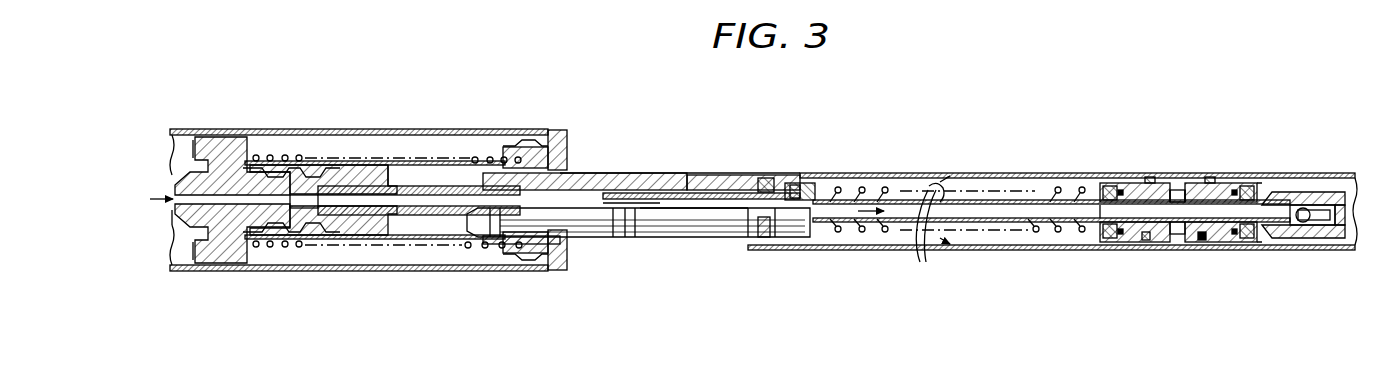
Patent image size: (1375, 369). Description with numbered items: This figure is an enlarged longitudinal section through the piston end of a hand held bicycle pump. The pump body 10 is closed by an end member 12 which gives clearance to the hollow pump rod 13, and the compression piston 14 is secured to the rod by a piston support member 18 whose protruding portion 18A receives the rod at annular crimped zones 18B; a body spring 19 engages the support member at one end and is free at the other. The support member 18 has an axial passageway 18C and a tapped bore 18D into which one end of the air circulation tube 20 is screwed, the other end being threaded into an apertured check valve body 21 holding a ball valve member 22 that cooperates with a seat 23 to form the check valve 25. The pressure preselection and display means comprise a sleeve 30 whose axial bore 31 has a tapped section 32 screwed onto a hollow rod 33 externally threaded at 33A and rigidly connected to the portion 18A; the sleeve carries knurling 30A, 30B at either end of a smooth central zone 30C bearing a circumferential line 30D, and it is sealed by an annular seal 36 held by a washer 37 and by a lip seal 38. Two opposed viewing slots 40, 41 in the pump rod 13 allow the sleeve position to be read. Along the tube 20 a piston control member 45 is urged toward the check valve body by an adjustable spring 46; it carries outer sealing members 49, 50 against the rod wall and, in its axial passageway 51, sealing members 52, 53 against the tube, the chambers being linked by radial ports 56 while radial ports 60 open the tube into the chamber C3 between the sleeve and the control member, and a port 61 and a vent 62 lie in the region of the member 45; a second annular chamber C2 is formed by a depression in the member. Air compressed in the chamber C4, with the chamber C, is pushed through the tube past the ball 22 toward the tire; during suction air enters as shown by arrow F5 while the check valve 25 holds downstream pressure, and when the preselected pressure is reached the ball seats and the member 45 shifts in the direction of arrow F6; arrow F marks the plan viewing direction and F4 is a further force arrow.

The pump body 10 is at (436, 128).
The end member 12 is at (545, 146).
The pump rod 13 is at (856, 173).
The compression piston 14 is at (208, 137).
The piston support member 18 is at (334, 162).
The protruding portion 18A is at (371, 178).
The annular crimped zones 18B is at (312, 172).
The axial passageway 18C is at (237, 195).
The tapped bore 18D is at (376, 195).
The body spring 19 is at (272, 250).
The air circulation tube 20 is at (965, 202).
The check valve body 21 is at (1274, 196).
The ball valve member 22 is at (1310, 220).
The seat 23 is at (1304, 222).
The check valve 25 is at (1313, 188).
The sleeve 30 is at (638, 225).
The knurling 30A is at (710, 233).
The knurling 30B is at (602, 222).
The smooth cylindrical central zone 30C is at (641, 238).
The circumferential line 30D is at (628, 238).
The axial bore 31 is at (692, 203).
The tapped section 32 is at (648, 196).
The hollow rod 33 is at (588, 189).
The external thread 33A is at (560, 186).
The annular seal 36 is at (800, 190).
The washer 37 is at (812, 192).
The seal 38 is at (768, 183).
The viewing slot 40 is at (707, 180).
The viewing slot 41 is at (736, 240).
The piston control member 45 is at (1148, 252).
The adjustable spring 46 is at (1036, 190).
The sealing member 49 is at (1120, 238).
The sealing member 50 is at (1200, 242).
The axial passageway 51 is at (1176, 205).
The sealing member 52 is at (1110, 240).
The sealing member 53 is at (1242, 240).
The radial ports 56 is at (1146, 241).
The radial ports 60 is at (935, 230).
The port 61 is at (1108, 226).
The vent 62 is at (1162, 183).
The chamber C is at (1213, 203).
The second annular chamber C2 is at (1180, 182).
The chamber C3 is at (907, 183).
The compression chamber C4 is at (180, 266).
The viewing direction arrow F is at (760, 118).
The force F4 is at (428, 287).
The air intake arrow F5 is at (358, 322).
The displacement arrow F6 is at (1085, 157).